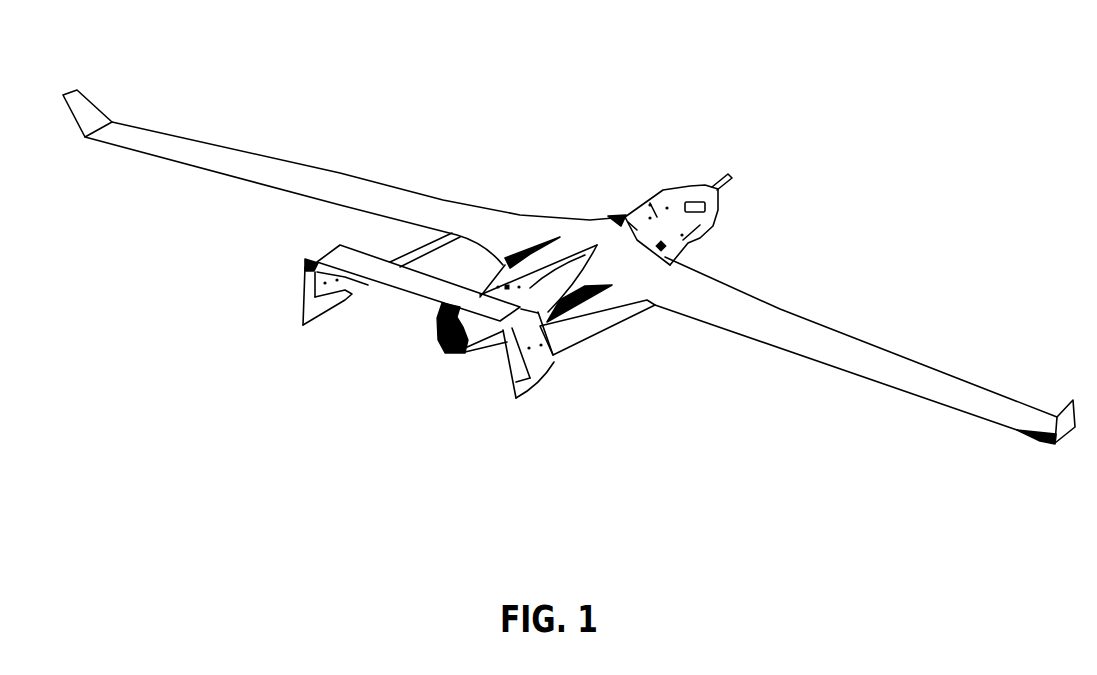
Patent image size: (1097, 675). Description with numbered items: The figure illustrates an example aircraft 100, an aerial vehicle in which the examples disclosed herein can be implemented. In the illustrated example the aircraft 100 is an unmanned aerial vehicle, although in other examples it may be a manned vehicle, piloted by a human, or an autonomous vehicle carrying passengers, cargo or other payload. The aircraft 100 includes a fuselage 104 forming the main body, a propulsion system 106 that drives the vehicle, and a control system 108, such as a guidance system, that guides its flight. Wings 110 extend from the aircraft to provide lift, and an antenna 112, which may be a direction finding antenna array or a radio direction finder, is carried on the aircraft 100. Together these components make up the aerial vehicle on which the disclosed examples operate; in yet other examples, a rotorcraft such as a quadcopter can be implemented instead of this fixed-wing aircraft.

The aircraft 100 is at (405, 38).
The fuselage 104 is at (658, 190).
The propulsion system 106 is at (437, 348).
The control system 108 is at (712, 180).
The wings 110 is at (230, 175).
The antenna 112 is at (719, 207).